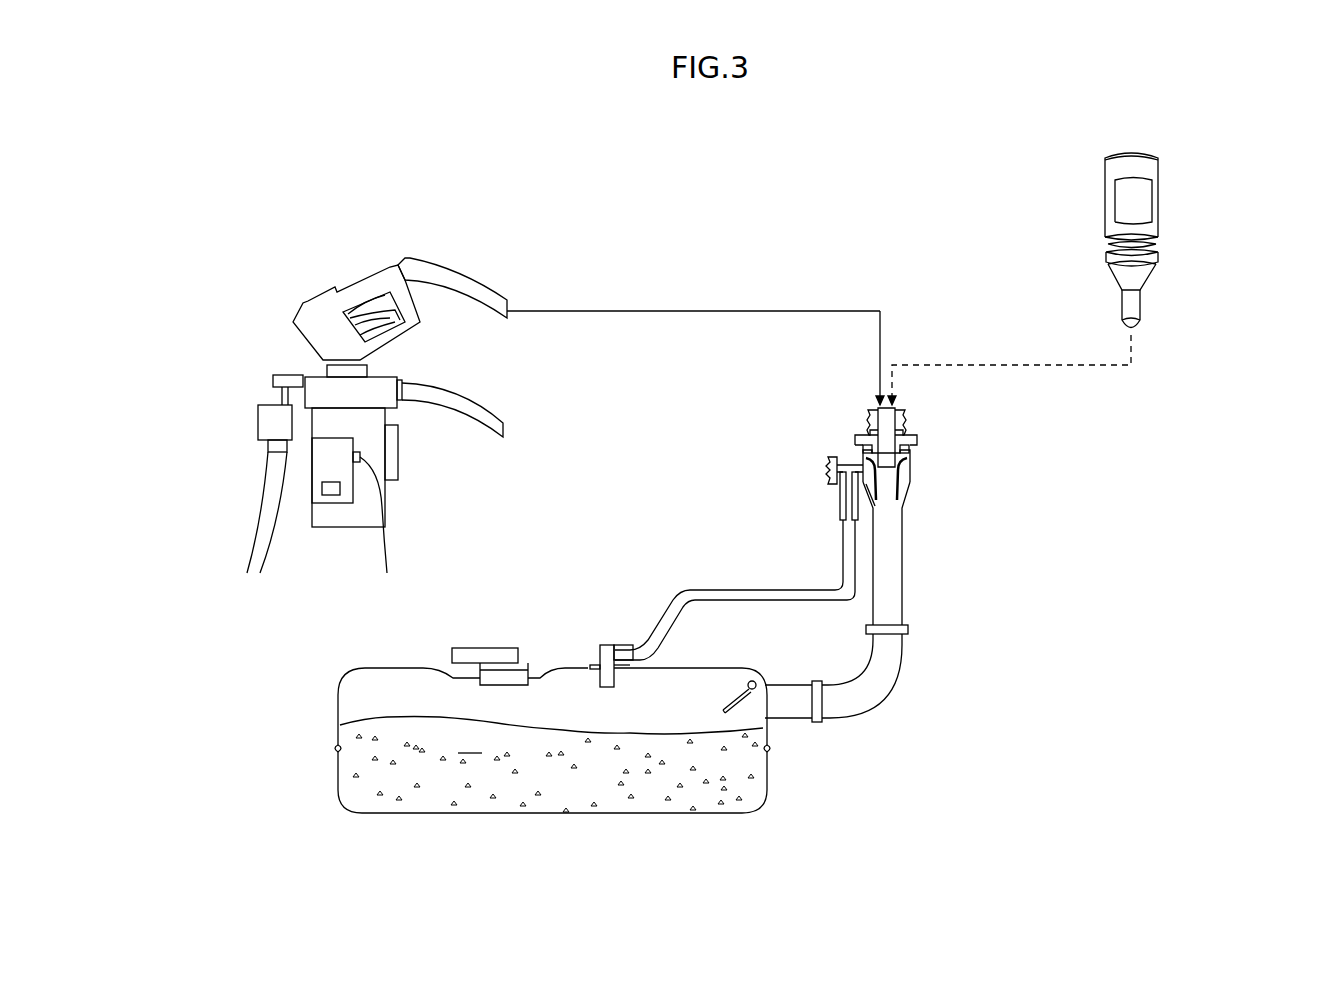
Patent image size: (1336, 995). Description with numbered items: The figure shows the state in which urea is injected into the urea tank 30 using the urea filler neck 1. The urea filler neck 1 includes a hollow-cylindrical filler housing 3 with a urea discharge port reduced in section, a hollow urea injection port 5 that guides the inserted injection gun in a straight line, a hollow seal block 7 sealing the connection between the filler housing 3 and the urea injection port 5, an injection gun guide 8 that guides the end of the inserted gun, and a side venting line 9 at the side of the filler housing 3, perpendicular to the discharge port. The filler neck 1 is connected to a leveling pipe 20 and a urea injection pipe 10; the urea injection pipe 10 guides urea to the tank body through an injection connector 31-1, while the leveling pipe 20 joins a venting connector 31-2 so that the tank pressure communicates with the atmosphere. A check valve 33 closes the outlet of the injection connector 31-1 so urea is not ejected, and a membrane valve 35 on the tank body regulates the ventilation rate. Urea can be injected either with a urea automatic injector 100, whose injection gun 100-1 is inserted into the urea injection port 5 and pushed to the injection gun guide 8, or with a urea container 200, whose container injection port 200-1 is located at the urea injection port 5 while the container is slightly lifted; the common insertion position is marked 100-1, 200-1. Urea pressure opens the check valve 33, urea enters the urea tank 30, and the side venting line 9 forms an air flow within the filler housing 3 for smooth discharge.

The urea filler neck 1 is at (1012, 407).
The filler housing 3 is at (915, 475).
The urea injection port 5 is at (910, 418).
The seal block 7 is at (915, 440).
The injection gun guide 8 is at (898, 485).
The side venting line 9 is at (832, 472).
The urea injection pipe 10 is at (902, 590).
The leveling pipe 20 is at (762, 590).
The urea tank 30 is at (392, 770).
The injection connector 31-1 is at (789, 708).
The venting connector 31-2 is at (607, 650).
The check valve 33 is at (739, 702).
The membrane valve 35 is at (500, 657).
The urea automatic injector 100 is at (325, 393).
The injection gun 100-1 is at (425, 268).
The urea container 200 is at (1145, 205).
The container injection port 200-1 is at (1130, 310).
The injection gun and container injection port 100-1, 200-1 is at (875, 425).